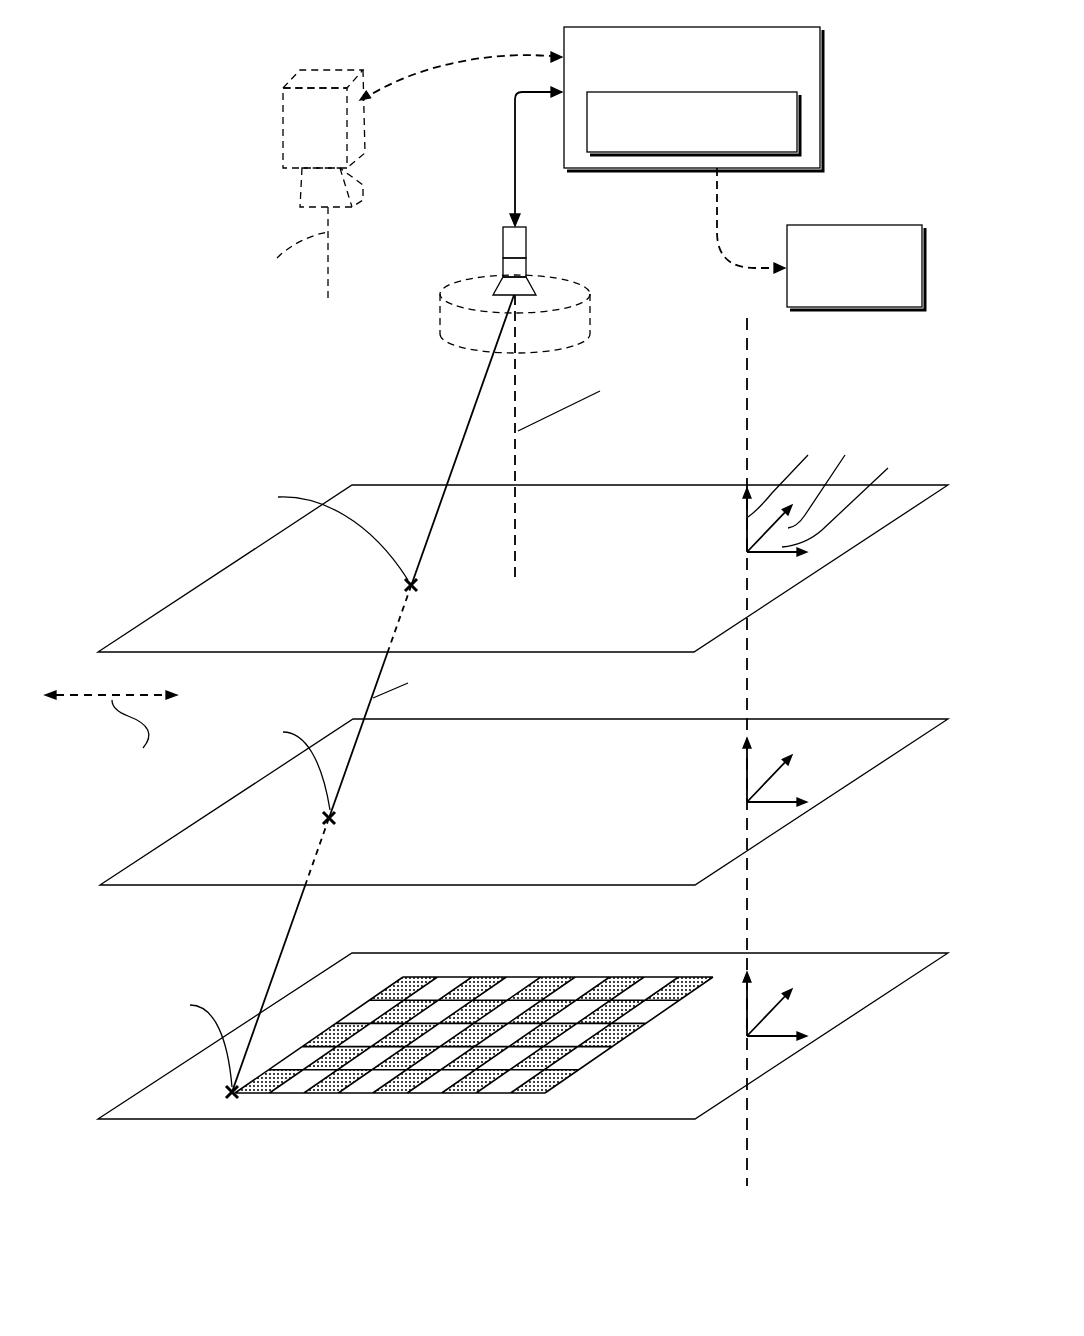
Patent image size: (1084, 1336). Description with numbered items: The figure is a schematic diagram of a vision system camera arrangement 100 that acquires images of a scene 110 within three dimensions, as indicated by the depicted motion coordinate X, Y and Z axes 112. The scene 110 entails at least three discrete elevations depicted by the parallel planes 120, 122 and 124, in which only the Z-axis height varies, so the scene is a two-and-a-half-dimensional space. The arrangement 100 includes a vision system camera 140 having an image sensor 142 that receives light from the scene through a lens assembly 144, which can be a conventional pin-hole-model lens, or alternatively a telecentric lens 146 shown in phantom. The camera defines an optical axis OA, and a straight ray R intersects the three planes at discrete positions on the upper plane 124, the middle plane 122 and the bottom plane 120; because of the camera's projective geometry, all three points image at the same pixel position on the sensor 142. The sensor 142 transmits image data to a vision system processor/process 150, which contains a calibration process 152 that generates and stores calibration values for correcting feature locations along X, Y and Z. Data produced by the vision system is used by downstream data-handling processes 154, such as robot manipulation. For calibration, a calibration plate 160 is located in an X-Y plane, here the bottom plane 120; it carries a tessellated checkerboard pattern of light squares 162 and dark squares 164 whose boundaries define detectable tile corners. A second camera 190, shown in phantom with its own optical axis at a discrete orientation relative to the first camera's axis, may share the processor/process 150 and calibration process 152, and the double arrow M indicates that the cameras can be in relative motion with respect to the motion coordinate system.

The vision system camera arrangement 100 is at (242, 340).
The scene 110 is at (842, 657).
The motion coordinate axes 112 is at (753, 557).
The plane 120 is at (172, 1090).
The plane 122 is at (180, 843).
The plane 124 is at (182, 615).
The vision system camera 140 is at (568, 244).
The image sensor 142 is at (513, 258).
The lens assembly 144 is at (528, 286).
The telecentric lens 146 is at (573, 327).
The vision system processor/process 150 is at (727, 99).
The calibration process 152 is at (793, 133).
The data-handling processes 154 is at (887, 305).
The calibration plate 160 is at (474, 1036).
The light squares 162 is at (517, 980).
The dark squares 164 is at (390, 990).
The second camera 190 is at (283, 110).